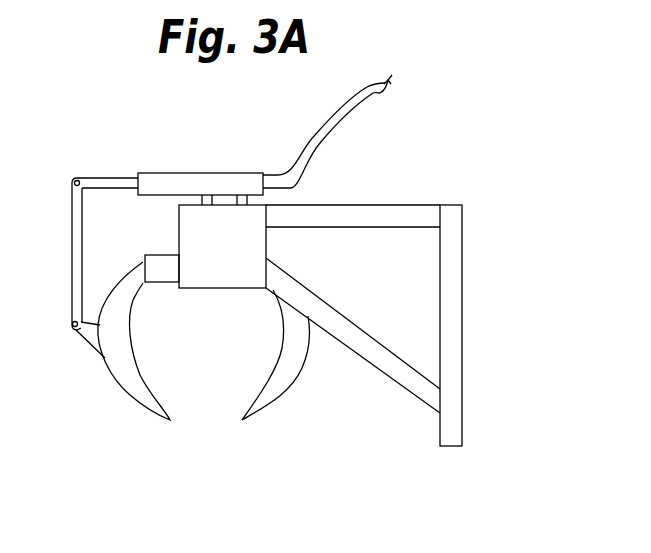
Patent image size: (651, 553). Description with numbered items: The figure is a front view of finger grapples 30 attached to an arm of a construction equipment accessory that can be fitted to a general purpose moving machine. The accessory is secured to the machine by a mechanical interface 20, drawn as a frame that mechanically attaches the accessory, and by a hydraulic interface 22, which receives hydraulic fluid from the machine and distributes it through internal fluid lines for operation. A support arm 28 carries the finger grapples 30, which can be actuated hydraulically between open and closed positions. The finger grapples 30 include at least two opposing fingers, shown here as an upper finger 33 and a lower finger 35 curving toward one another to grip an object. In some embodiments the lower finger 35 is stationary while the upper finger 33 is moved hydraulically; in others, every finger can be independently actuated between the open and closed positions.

The mechanical interface 20 is at (463, 280).
The hydraulic interface 22 is at (222, 172).
The support arm 28 is at (248, 247).
The finger grapples 30 is at (215, 457).
The upper finger 33 is at (113, 382).
The lower finger 35 is at (285, 393).